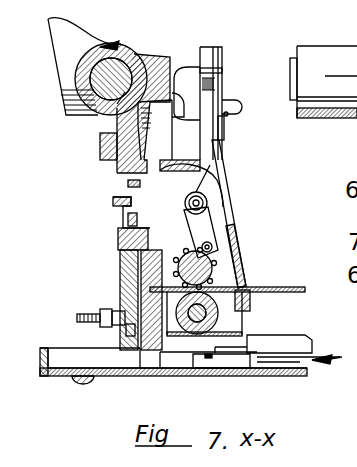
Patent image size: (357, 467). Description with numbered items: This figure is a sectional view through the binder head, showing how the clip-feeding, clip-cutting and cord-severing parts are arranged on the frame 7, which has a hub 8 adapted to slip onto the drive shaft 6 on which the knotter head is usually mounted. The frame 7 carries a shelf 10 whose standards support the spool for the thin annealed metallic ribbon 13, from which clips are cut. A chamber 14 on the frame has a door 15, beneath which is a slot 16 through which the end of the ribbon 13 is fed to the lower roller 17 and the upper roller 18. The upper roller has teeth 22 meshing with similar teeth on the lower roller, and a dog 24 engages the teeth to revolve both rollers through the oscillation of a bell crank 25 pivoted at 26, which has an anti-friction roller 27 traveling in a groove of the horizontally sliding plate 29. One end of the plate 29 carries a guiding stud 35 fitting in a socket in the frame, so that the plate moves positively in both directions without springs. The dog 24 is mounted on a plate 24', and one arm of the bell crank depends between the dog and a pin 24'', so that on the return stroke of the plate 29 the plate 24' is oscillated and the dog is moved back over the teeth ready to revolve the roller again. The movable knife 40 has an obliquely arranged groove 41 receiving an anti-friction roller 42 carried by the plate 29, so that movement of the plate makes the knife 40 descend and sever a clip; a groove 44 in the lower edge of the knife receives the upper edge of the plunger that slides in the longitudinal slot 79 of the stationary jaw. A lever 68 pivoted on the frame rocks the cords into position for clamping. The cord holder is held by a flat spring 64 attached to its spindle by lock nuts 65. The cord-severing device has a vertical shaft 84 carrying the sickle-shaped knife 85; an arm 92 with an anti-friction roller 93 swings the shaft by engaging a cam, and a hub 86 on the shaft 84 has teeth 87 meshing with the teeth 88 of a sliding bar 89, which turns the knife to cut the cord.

The drive shaft 6 is at (148, 62).
The frame 7 is at (127, 137).
The hub 8 is at (112, 70).
The shelf 10 is at (48, 370).
The metallic ribbon 13 is at (298, 291).
The chamber 14 is at (214, 205).
The door 15 is at (207, 221).
The slot 16 is at (242, 290).
The lower roller 17 is at (203, 328).
The upper roller 18 is at (215, 271).
The teeth 22 is at (232, 308).
The dog 24 is at (248, 214).
The plate 24' is at (102, 300).
The pin 24'' is at (95, 294).
The bell crank 25 is at (203, 217).
The pivot 26 is at (208, 190).
The anti-friction roller 27 is at (191, 172).
The sliding plate 29 is at (133, 182).
The guiding stud 35 is at (161, 126).
The movable knife 40 is at (117, 240).
The oblique groove 41 is at (113, 201).
The anti-friction roller 42 is at (117, 208).
The groove 44 is at (118, 285).
The flat spring 64 is at (302, 344).
The lock nuts 65 is at (356, 306).
The lever 68 is at (107, 150).
The longitudinal slot 79 is at (130, 330).
The vertical shaft 84 is at (188, 357).
The sickle-shaped knife 85 is at (324, 362).
The hub 86 is at (218, 118).
The teeth 87 is at (215, 82).
The teeth 88 is at (203, 46).
The sliding bar 89 is at (183, 82).
The arm 92 is at (227, 114).
The anti-friction roller 93 is at (242, 107).